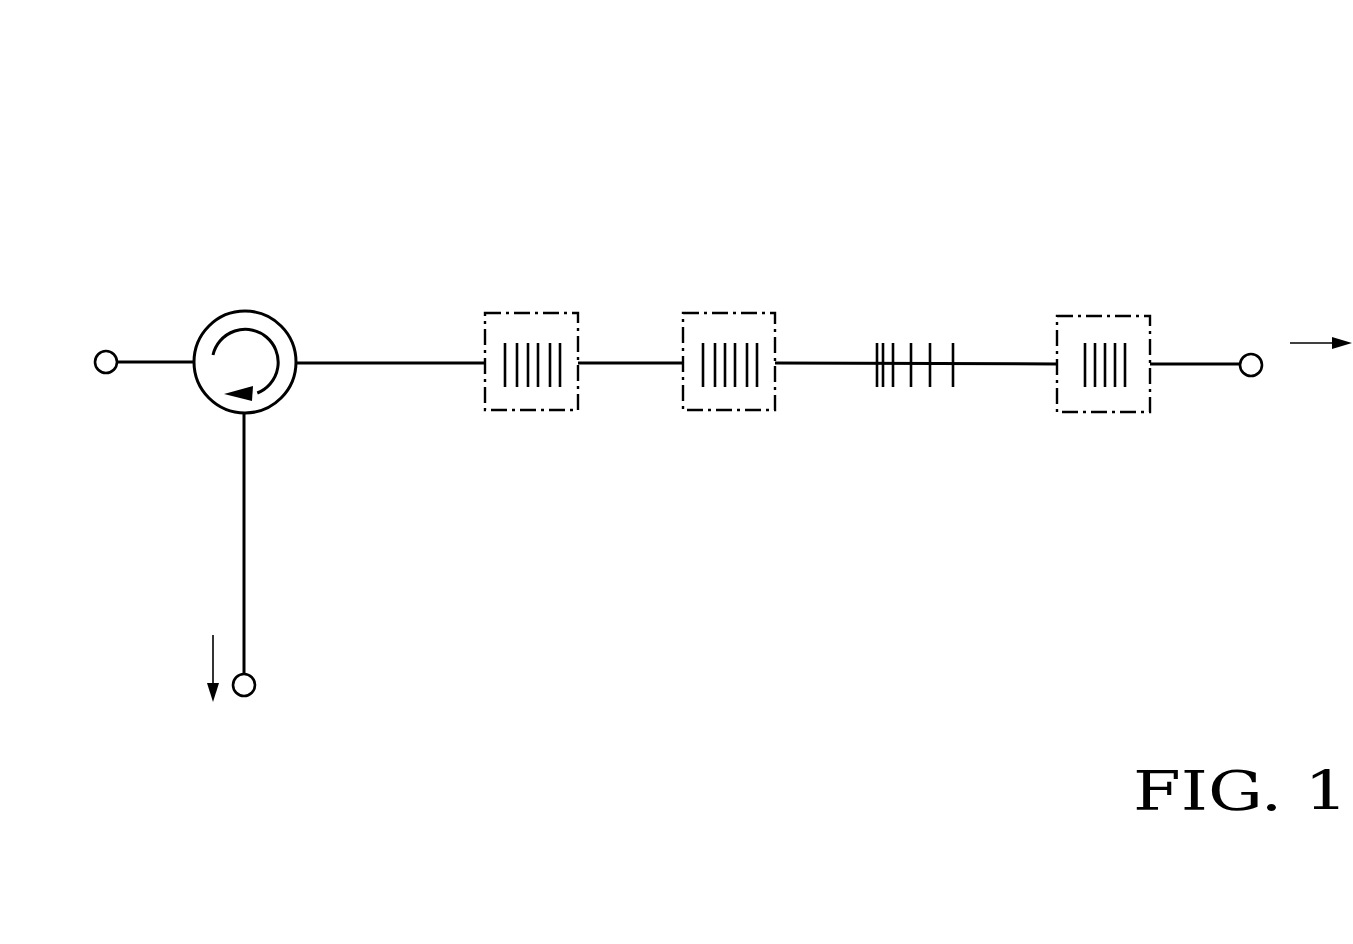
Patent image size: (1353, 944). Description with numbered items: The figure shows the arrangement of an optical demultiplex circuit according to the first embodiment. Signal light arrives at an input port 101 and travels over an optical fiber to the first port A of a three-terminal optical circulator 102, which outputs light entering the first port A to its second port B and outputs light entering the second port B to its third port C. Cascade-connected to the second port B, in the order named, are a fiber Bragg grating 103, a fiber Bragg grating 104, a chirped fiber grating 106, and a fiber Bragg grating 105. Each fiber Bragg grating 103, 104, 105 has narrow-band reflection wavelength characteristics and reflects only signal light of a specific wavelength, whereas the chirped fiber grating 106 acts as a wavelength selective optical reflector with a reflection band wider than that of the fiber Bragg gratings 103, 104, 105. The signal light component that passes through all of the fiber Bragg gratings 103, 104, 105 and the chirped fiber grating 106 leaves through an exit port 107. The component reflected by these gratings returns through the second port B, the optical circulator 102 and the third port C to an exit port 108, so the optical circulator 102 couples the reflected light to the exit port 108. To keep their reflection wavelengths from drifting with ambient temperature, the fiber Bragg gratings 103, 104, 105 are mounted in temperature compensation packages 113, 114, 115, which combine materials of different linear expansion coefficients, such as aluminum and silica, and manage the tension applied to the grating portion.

The input port 101 is at (103, 352).
The optical circulator 102 is at (250, 310).
The first port A is at (193, 358).
The second port B is at (297, 365).
The third port C is at (243, 413).
The fiber Bragg grating 103 is at (535, 333).
The fiber Bragg grating 104 is at (735, 335).
The fiber Bragg grating 105 is at (1107, 333).
The chirped fiber grating 106 is at (917, 333).
The exit port 107 is at (1250, 353).
The exit port 108 is at (255, 685).
The temperature compensation package 113 is at (535, 364).
The temperature compensation package 114 is at (732, 365).
The temperature compensation package 115 is at (1104, 366).